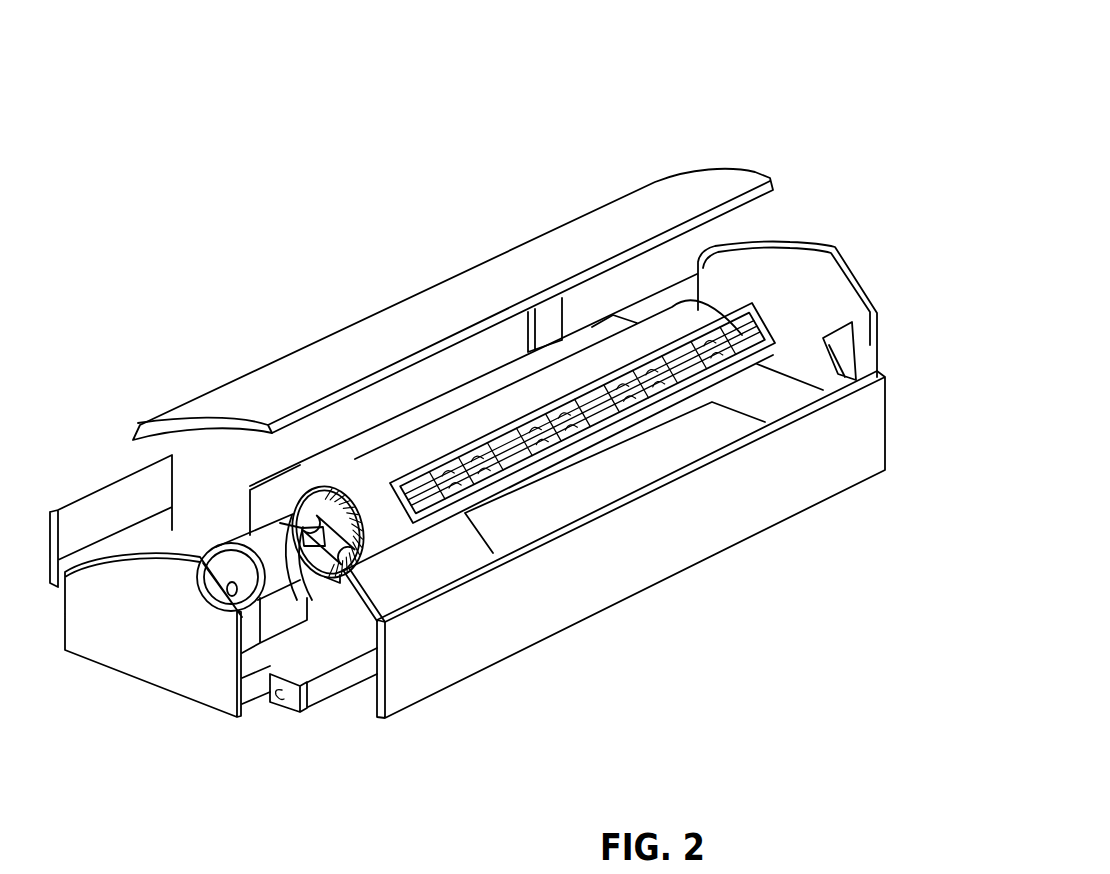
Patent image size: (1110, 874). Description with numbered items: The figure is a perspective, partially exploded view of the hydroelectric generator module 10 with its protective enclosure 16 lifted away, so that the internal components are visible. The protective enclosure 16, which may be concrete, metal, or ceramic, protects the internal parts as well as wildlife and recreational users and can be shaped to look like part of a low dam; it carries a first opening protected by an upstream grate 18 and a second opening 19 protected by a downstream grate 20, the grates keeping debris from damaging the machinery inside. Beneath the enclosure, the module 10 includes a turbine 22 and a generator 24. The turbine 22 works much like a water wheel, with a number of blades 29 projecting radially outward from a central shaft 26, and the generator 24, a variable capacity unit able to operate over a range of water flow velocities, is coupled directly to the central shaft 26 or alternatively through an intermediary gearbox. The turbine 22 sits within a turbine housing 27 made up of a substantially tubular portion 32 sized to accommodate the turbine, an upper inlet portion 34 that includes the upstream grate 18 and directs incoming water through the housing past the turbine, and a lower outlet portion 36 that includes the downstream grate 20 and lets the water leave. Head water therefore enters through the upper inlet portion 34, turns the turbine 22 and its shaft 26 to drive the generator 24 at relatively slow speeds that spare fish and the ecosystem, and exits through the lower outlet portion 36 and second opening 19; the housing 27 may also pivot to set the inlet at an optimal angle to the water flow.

The generator module 10 is at (707, 64).
The protective enclosure 16 is at (608, 198).
The upstream grate 18 is at (767, 323).
The second opening 19 is at (378, 440).
The downstream grate 20 is at (243, 503).
The turbine 22 is at (300, 545).
The generator 24 is at (272, 703).
The central shaft 26 is at (341, 578).
The turbine housing 27 is at (347, 483).
The blades 29 is at (272, 484).
The substantially tubular portion 32 is at (440, 428).
The upper inlet portion 34 is at (500, 420).
The lower outlet portion 36 is at (245, 506).